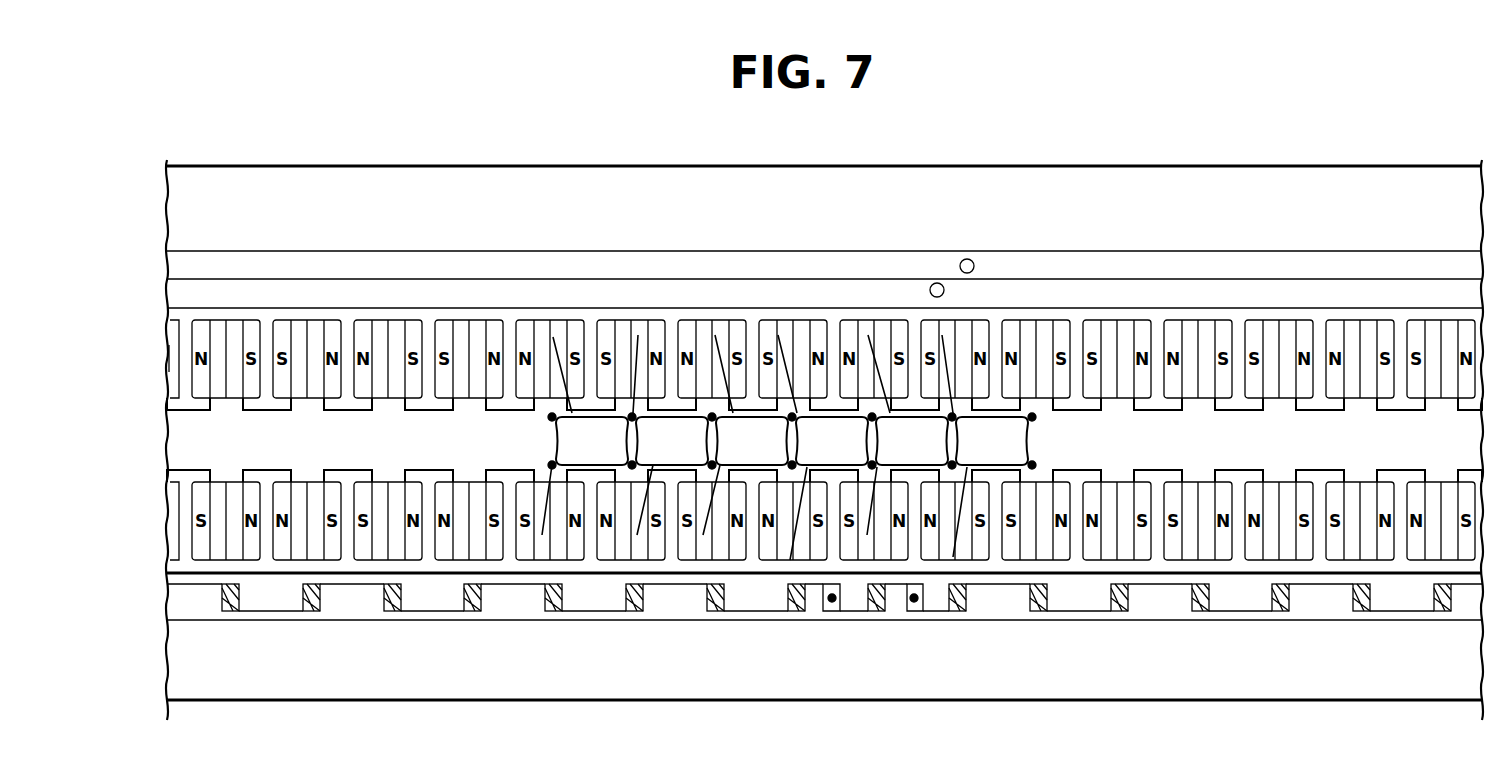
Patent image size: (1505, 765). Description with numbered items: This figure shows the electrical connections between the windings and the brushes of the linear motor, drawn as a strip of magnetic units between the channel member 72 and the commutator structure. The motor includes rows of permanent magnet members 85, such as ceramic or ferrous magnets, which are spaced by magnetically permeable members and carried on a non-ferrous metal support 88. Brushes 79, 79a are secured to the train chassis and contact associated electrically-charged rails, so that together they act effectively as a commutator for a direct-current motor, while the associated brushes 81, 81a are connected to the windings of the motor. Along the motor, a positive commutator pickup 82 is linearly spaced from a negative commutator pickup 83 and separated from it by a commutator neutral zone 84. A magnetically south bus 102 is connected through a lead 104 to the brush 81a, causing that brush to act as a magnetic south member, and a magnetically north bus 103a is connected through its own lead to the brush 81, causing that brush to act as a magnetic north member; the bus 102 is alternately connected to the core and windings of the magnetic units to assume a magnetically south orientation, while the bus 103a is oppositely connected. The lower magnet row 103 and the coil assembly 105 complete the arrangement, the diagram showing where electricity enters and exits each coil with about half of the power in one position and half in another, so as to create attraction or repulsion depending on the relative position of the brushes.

The channel member 72 is at (1290, 165).
The brush 79 is at (967, 259).
The brush 79a is at (935, 283).
The brush 81 is at (832, 602).
The brush 81a is at (915, 602).
The positive commutator pickup 82 is at (1408, 607).
The negative commutator pickup 83 is at (1328, 605).
The commutator neutral zone 84 is at (1280, 612).
The permanent magnet member 85 is at (819, 364).
The non-ferrous metal support 88 is at (488, 308).
The magnetically south bus 102 is at (1040, 335).
The lower permanent magnet array 103 is at (824, 578).
The magnetically north bus 103a is at (790, 560).
The lead 104 is at (1084, 388).
The coil assembly 105 is at (1040, 445).